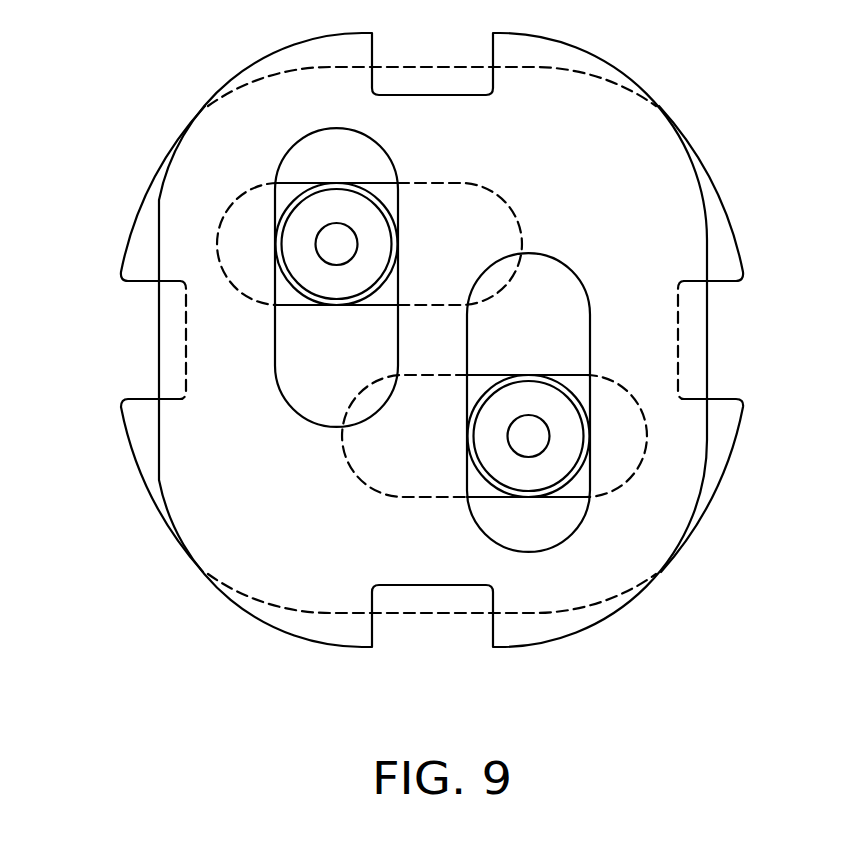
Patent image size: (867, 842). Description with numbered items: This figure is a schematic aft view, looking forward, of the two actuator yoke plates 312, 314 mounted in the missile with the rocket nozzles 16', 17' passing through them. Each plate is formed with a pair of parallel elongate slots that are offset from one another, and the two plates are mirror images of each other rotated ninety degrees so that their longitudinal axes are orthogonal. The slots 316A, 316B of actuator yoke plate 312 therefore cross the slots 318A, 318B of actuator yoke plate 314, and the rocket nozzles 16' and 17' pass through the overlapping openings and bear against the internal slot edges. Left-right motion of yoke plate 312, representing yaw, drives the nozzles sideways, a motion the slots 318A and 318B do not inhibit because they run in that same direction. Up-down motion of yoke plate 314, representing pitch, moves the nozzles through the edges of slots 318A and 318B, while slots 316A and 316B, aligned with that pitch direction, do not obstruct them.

The actuator yoke plate 312 is at (643, 83).
The actuator yoke plate 314 is at (714, 160).
The elongate slot 316A is at (552, 553).
The elongate slot 316B is at (275, 286).
The elongate slot 318A is at (637, 460).
The elongate slot 318B is at (237, 202).
The rocket nozzle 16' is at (317, 203).
The rocket nozzle 17' is at (567, 463).